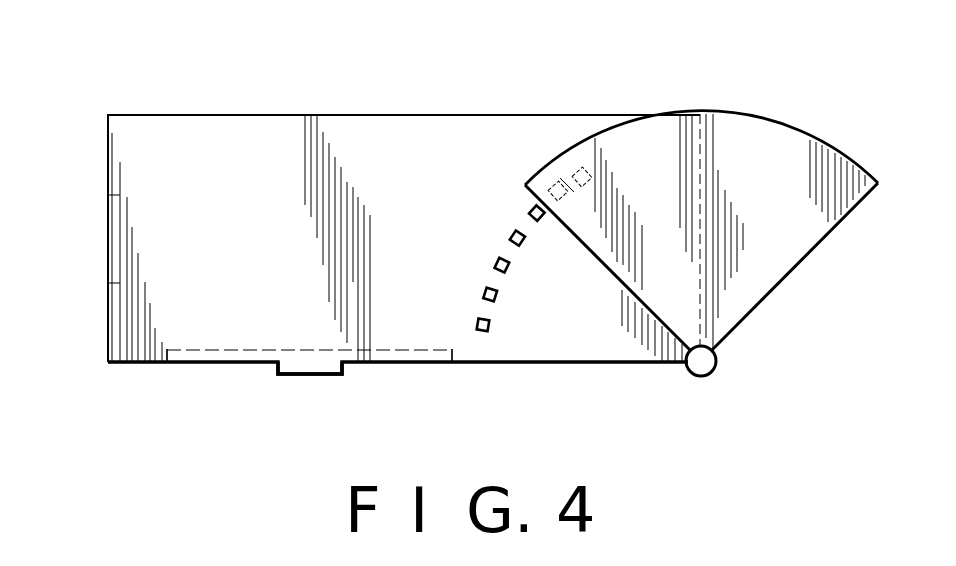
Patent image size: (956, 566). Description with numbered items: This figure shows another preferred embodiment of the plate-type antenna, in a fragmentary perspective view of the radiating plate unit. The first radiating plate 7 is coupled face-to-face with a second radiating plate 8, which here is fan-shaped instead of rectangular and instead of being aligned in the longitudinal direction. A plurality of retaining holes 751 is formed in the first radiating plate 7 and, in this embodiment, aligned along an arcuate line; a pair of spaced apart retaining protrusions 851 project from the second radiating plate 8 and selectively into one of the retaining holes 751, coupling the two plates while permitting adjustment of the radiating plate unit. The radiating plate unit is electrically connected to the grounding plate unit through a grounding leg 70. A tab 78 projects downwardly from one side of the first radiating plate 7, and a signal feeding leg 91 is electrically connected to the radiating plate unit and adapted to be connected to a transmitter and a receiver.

The first radiating plate 7 is at (365, 127).
The grounding leg 70 is at (108, 238).
The tab 78 is at (228, 355).
The signal feeding leg 91 is at (309, 368).
The retaining holes 751 is at (527, 213).
The second radiating plate 8 is at (810, 170).
The retaining protrusions 851 is at (560, 182).